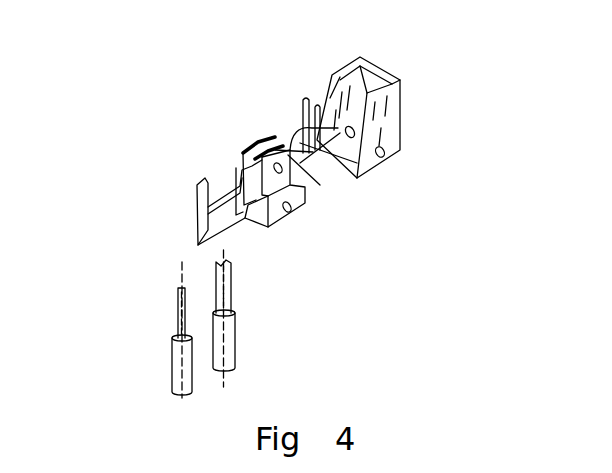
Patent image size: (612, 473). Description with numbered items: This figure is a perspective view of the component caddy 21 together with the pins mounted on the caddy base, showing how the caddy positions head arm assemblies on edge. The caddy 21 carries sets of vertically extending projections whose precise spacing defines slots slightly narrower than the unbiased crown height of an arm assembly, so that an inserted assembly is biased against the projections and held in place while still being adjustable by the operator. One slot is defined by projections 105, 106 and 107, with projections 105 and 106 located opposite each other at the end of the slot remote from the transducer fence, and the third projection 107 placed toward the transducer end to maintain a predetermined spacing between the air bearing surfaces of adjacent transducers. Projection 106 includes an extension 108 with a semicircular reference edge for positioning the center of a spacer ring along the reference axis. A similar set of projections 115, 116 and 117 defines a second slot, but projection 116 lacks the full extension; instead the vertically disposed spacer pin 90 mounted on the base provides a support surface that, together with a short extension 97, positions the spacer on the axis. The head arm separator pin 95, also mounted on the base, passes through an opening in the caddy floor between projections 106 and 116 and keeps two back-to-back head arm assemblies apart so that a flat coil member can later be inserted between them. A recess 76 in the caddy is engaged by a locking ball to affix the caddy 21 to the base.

The caddy 21 is at (354, 26).
The recess 76 is at (387, 158).
The spacer pin 90 is at (178, 318).
The head arm separator pin 95 is at (232, 301).
The short extension 97 is at (268, 228).
The projection 105 is at (255, 152).
The projection 106 is at (280, 145).
The projection 107 is at (304, 97).
The extension 108 is at (197, 205).
The projection 115 is at (308, 146).
The projection 116 is at (322, 162).
The projection 117 is at (318, 105).